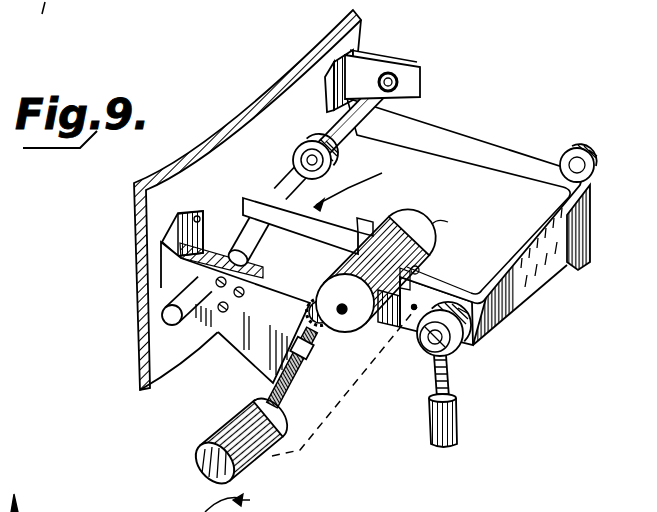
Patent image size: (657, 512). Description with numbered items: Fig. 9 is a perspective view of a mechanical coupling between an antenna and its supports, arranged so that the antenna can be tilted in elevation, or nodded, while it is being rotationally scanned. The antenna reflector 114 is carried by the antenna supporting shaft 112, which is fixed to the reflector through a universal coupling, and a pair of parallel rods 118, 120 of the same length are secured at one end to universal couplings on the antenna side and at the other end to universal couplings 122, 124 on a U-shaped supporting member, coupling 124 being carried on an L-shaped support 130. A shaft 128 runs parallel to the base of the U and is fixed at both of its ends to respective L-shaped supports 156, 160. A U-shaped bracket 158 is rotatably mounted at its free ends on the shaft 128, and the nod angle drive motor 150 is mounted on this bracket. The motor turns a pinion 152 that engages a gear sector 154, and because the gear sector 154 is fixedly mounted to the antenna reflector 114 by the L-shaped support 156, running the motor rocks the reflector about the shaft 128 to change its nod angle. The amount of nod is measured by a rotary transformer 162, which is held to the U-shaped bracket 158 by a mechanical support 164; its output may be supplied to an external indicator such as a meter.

The antenna supporting shaft 112 is at (348, 207).
The antenna reflector 114 is at (254, 107).
The rod 118 is at (572, 264).
The rod 120 is at (438, 426).
The universal coupling 122 is at (583, 135).
The universal coupling 124 is at (427, 348).
The shaft 128 is at (284, 183).
The L-shaped support 130 is at (23, 12).
The nod angle drive motor 150 is at (422, 256).
The pinion 152 is at (327, 334).
The gear sector 154 is at (232, 327).
The L-shaped support 156 is at (190, 204).
The U-shaped bracket 158 is at (483, 137).
The L-shaped support 160 is at (383, 66).
The rotary transformer 162 is at (209, 434).
The mechanical support 164 is at (315, 436).